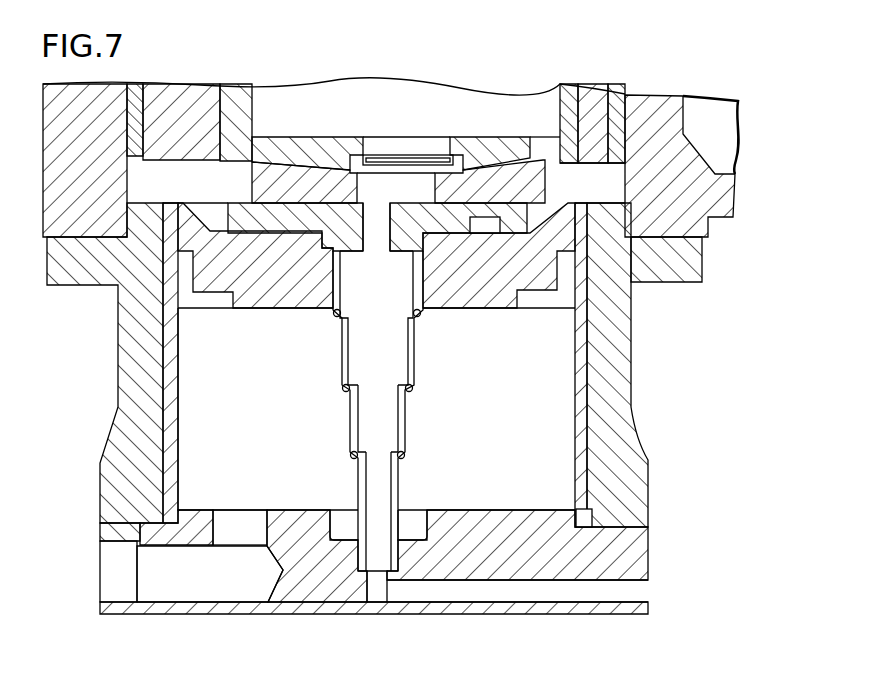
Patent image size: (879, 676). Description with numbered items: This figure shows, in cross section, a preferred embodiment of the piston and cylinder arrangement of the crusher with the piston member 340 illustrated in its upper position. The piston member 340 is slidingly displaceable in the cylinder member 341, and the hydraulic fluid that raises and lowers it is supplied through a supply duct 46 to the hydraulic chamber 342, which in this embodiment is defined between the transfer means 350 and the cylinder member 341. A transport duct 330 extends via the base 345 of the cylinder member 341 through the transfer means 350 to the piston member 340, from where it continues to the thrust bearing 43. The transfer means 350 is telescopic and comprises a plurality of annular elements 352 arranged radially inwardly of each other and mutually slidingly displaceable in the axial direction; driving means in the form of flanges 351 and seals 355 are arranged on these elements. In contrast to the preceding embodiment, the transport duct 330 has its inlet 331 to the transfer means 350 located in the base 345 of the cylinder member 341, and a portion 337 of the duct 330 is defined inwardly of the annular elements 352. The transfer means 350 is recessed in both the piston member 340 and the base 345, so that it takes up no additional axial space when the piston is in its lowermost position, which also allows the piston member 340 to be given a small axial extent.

The thrust bearing 43 is at (290, 187).
The supply duct 46 is at (207, 580).
The transport duct 330 is at (457, 592).
The inlet 331 is at (380, 584).
The portion of the duct 337 is at (380, 490).
The piston member 340 is at (272, 283).
The cylinder member 341 is at (617, 333).
The hydraulic chamber 342 is at (547, 411).
The base 345 is at (512, 538).
The transfer means 350 is at (418, 383).
The flanges 351 is at (339, 328).
The annular elements 352 is at (340, 417).
The seals 355 is at (403, 455).